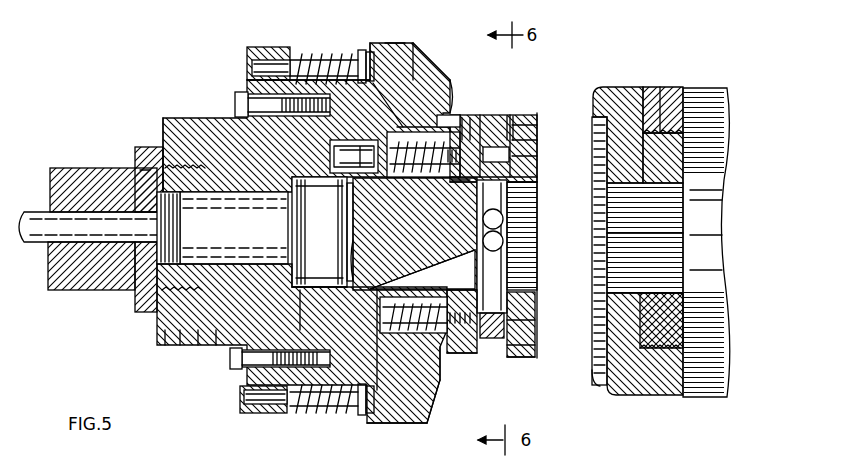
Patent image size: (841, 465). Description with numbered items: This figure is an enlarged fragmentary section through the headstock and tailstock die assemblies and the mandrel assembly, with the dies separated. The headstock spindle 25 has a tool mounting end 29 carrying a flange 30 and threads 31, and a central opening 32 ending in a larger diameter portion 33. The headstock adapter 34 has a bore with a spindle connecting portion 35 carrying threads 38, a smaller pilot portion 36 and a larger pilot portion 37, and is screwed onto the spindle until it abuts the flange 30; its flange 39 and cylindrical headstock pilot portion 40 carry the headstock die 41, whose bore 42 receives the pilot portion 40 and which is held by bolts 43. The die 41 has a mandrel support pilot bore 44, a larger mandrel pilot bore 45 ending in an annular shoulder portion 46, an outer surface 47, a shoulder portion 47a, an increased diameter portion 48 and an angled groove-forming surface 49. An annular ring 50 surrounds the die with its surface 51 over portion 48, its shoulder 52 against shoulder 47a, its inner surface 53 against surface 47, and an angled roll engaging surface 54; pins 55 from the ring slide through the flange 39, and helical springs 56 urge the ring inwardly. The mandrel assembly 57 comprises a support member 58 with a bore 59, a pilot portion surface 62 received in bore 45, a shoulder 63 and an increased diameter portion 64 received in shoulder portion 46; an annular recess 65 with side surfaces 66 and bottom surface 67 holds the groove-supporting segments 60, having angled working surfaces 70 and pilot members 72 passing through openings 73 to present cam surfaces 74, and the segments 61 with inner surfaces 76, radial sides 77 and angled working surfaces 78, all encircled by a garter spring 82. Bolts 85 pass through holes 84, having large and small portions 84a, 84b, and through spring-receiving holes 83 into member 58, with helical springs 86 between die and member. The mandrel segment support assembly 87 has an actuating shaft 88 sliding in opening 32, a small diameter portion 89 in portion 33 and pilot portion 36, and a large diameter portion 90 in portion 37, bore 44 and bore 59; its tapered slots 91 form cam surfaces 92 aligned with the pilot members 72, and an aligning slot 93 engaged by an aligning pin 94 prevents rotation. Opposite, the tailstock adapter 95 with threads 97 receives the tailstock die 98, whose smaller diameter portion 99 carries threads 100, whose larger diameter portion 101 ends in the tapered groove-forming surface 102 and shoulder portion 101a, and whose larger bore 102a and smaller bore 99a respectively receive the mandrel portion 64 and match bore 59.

The headstock spindle 25 is at (66, 180).
The tool mounting end 29 is at (140, 178).
The flange 30 is at (150, 150).
The threads 31 is at (168, 120).
The opening 32 is at (83, 246).
The larger diameter portion 33 is at (158, 296).
The headstock adapter 34 is at (193, 128).
The spindle connecting portion 35 is at (200, 342).
The smaller diameter support means pilot portion 36 is at (217, 336).
The larger diameter support means pilot portion 37 is at (245, 310).
The threads 38 is at (168, 336).
The flange 39 is at (250, 52).
The headstock pilot portion 40 is at (316, 190).
The headstock die 41 is at (325, 52).
The bore 42 is at (330, 145).
The bolts 43 is at (258, 100).
The mandrel support means pilot portion 44 is at (298, 354).
The mandrel pilot bore 45 is at (389, 340).
The annular shoulder portion 46 is at (442, 362).
The axially extending surface 47 is at (356, 55).
The shoulder portion 47a is at (422, 114).
The outer increased diameter portion 48 is at (440, 60).
The annular groove-forming surface 49 is at (455, 118).
The annular ring 50 is at (394, 43).
The axially extending surface 51 is at (418, 46).
The radially inwardly extending shoulder 52 is at (378, 48).
The axially extending inner surface 53 is at (384, 108).
The angled roll engaging surface 54 is at (450, 90).
The pins 55 is at (270, 50).
The helical springs 56 is at (303, 54).
The mandrel assembly 57 is at (540, 113).
The support member 58 is at (522, 118).
The bore 59 is at (538, 298).
The groove-supporting segments 60 is at (538, 322).
The groove-supporting segments 61 is at (490, 122).
The pilot portion surface 62 is at (466, 128).
The shoulder 63 is at (448, 354).
The increased diameter portion surface 64 is at (522, 362).
The annular recess 65 is at (509, 118).
The side surfaces 66 is at (470, 354).
The bottom surface 67 is at (540, 175).
The angled side working surfaces 70 is at (535, 345).
The pilot members 72 is at (515, 200).
The circular openings 73 is at (503, 243).
The circular cam surfaces 74 is at (503, 221).
The inner arcuate surfaces 76 is at (540, 156).
The side radially extending surfaces 77 is at (540, 141).
The side inwardly angled working surfaces 78 is at (540, 126).
The helical garter spring 82 is at (495, 340).
The spring-receiving holes 83 is at (402, 424).
The bolt-receiving holes 84 is at (372, 274).
The large diameter hole portions 84a is at (345, 268).
The small diameter hole portions 84b is at (360, 192).
The bolts 85 is at (378, 424).
The helical springs 86 is at (432, 422).
The mandrel segment support assembly 87 is at (182, 334).
The actuating shaft 88 is at (33, 244).
The small diameter portion 89 is at (222, 228).
The large diameter portion 90 is at (300, 292).
The tapered slots 91 is at (438, 280).
The tapered cam surfaces 92 is at (404, 272).
The aligning slot 93 is at (420, 186).
The aligning pin 94 is at (458, 186).
The adapter 95 is at (700, 88).
The threads 97 is at (662, 86).
The tailstock die 98 is at (628, 92).
The smaller diameter portion 99 is at (660, 340).
The smaller diameter bore 99a is at (632, 190).
The threads 100 is at (648, 300).
The larger diameter portion 101 is at (612, 398).
The shoulder portion 101a is at (607, 322).
The annular groove-forming surface 102 is at (597, 388).
The larger diameter bore 102a is at (592, 377).